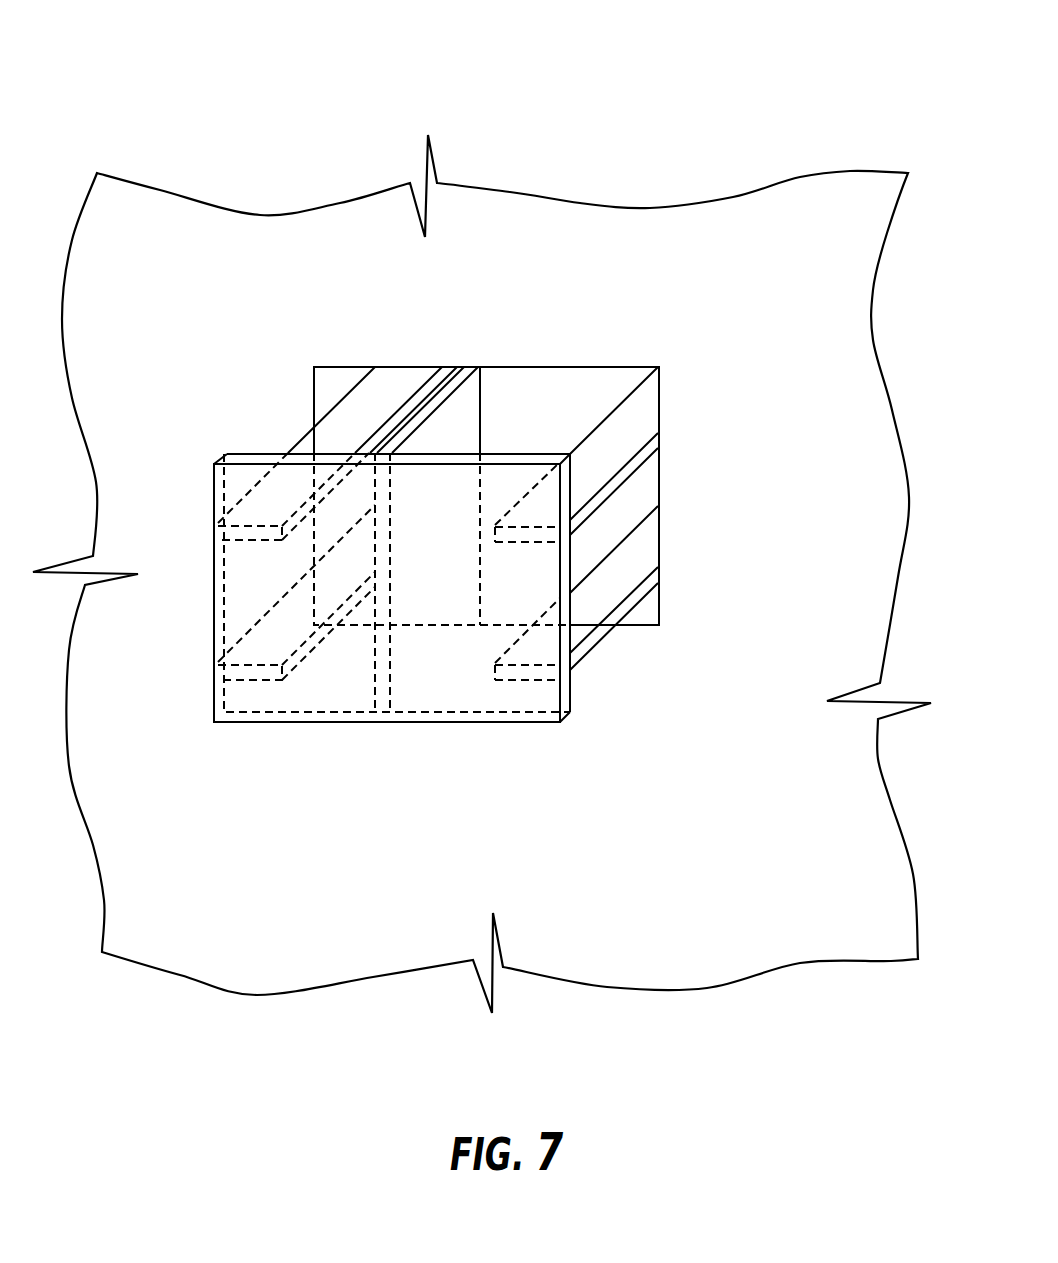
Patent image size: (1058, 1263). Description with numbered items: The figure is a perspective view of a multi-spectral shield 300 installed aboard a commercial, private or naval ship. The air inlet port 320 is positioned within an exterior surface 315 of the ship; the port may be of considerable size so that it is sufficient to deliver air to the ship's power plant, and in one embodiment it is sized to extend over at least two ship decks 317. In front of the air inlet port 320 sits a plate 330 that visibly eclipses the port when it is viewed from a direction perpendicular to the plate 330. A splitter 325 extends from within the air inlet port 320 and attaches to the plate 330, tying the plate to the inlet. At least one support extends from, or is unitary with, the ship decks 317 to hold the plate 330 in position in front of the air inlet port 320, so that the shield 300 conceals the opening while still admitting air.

The multi-spectral shield 300 is at (615, 335).
The exterior surface 315 is at (310, 237).
The ship decks 317 is at (622, 580).
The air inlet port 320 is at (345, 367).
The splitter 325 is at (460, 415).
The plate 330 is at (482, 697).